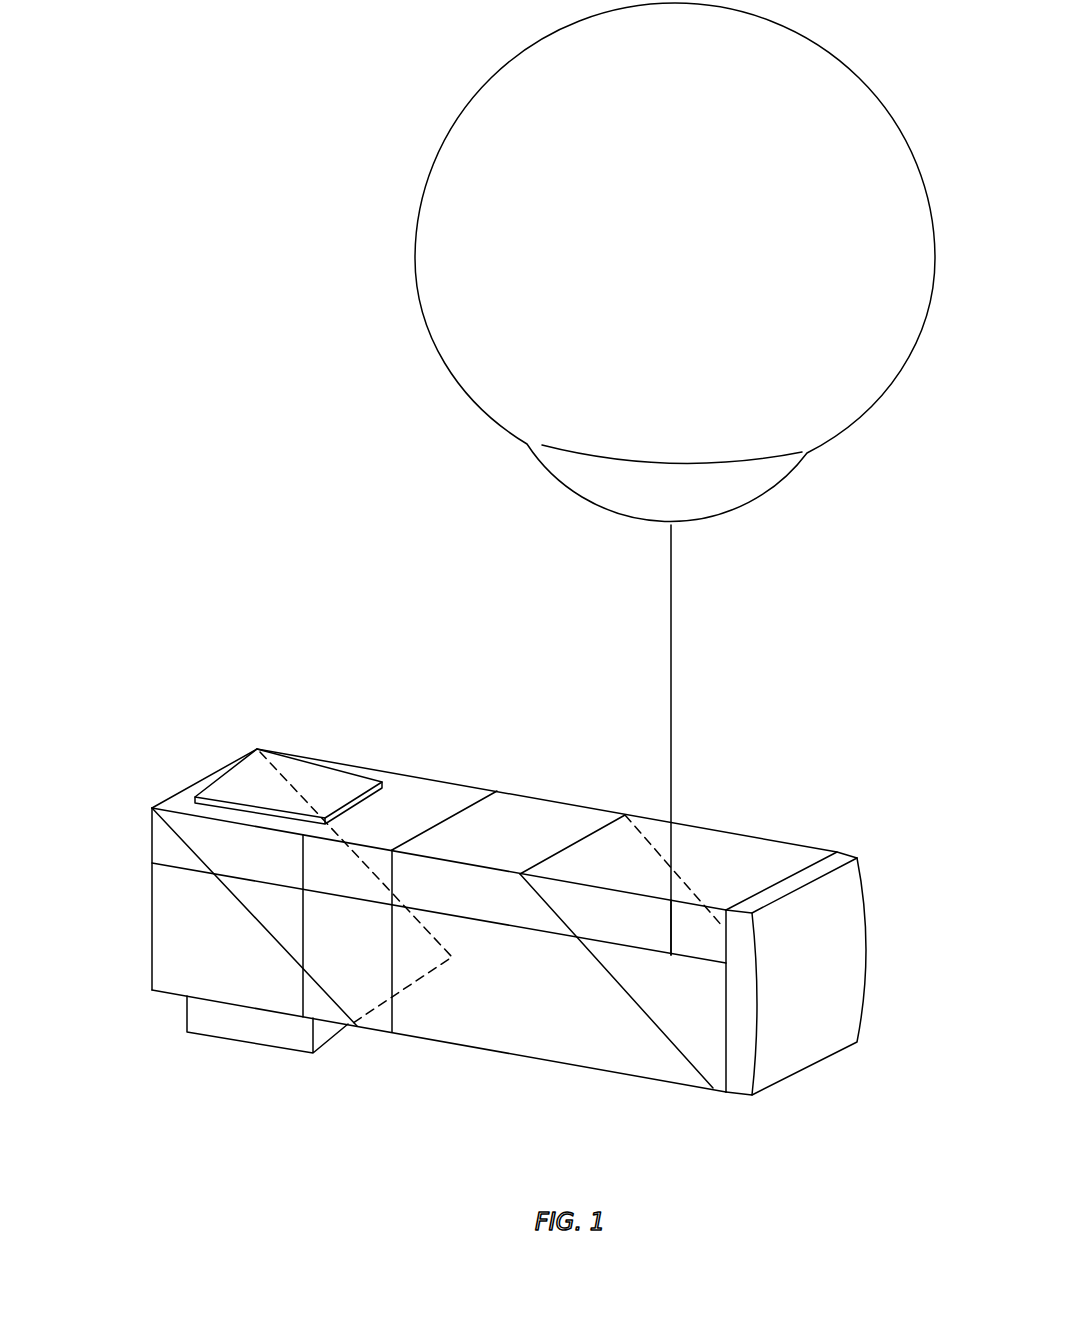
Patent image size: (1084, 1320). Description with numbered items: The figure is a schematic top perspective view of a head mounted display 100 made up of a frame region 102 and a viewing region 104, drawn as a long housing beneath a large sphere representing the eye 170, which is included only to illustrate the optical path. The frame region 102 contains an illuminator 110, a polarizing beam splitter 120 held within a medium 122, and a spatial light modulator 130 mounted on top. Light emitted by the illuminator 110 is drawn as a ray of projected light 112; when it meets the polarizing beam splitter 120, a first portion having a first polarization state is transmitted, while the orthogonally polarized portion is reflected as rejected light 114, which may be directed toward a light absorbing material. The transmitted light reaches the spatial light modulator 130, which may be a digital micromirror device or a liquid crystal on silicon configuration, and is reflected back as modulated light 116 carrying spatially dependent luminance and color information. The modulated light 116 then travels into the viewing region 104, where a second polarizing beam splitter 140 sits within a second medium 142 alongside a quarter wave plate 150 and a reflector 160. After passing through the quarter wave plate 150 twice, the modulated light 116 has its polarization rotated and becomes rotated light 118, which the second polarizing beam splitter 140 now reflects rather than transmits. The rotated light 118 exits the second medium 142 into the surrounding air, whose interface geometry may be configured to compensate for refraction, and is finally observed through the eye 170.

The head mounted display 100 is at (190, 718).
The frame region 102 is at (502, 708).
The viewing region 104 is at (387, 1055).
The illuminator 110 is at (212, 1022).
The projected light 112 is at (245, 961).
The rejected light 114 is at (188, 872).
The modulated light 116 is at (360, 897).
The rotated light 118 is at (703, 962).
The polarizing beam splitter 120 is at (173, 834).
The medium 122 is at (452, 800).
The spatial light modulator 130 is at (330, 783).
The second polarizing beam splitter 140 is at (593, 847).
The second medium 142 is at (528, 820).
The quarter wave plate 150 is at (812, 873).
The reflector 160 is at (835, 901).
The eye 170 is at (565, 492).